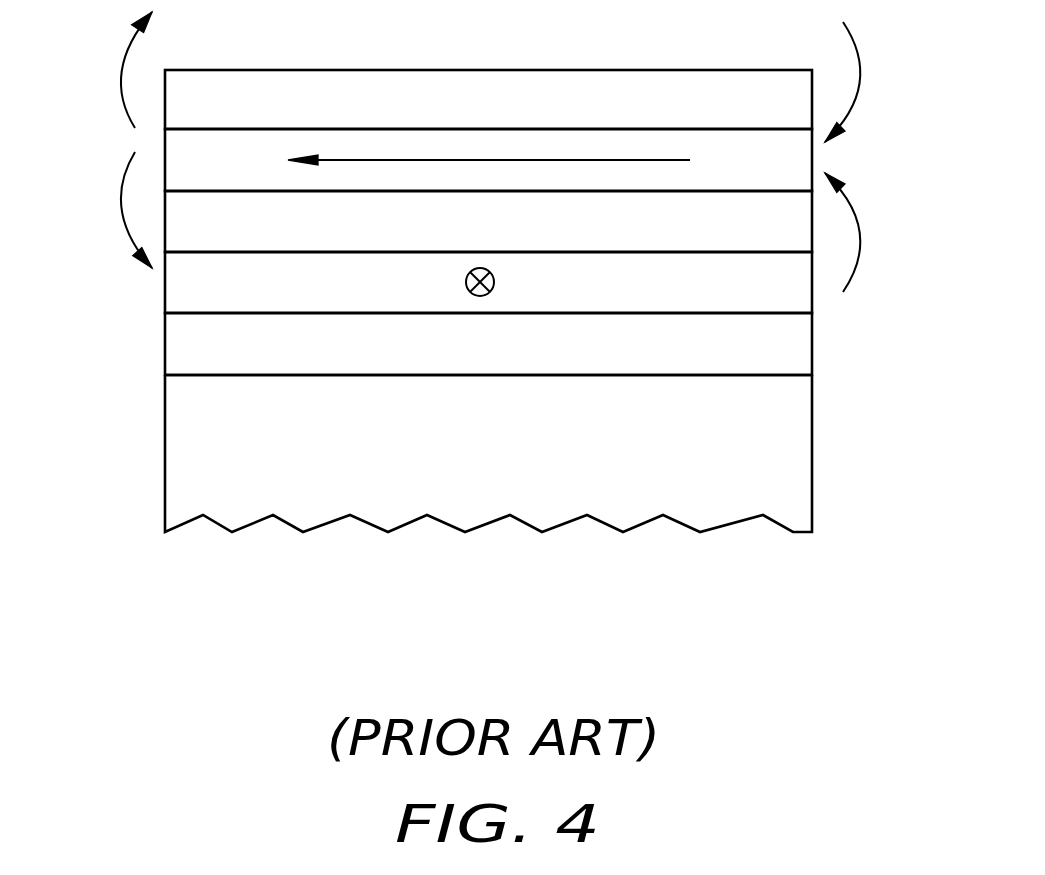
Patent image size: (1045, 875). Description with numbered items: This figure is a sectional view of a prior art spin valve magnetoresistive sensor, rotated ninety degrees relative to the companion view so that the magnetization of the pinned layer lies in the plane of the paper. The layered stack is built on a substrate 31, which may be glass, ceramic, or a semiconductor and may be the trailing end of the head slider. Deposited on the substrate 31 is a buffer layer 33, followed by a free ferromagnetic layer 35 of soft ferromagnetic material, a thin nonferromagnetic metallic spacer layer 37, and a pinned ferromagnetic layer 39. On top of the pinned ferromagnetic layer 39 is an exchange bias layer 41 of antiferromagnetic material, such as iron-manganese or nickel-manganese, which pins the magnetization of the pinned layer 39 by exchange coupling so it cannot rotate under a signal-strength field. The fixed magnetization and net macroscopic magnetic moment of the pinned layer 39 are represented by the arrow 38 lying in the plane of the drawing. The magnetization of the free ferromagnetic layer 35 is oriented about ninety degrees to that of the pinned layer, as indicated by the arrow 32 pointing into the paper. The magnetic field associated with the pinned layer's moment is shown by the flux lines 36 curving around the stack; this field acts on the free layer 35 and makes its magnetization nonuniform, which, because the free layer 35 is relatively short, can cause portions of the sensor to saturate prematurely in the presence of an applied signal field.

The substrate 31 is at (770, 410).
The arrow indicating magnetization of free ferromagnetic layer 32 is at (470, 292).
The buffer layer 33 is at (770, 348).
The free ferromagnetic layer 35 is at (770, 286).
The flux lines 36 is at (120, 50).
The nonferromagnetic metallic spacer layer 37 is at (770, 226).
The arrow indicating magnetization of pinned ferromagnetic layer 38 is at (536, 160).
The pinned ferromagnetic layer 39 is at (770, 165).
The exchange bias layer 41 is at (770, 106).